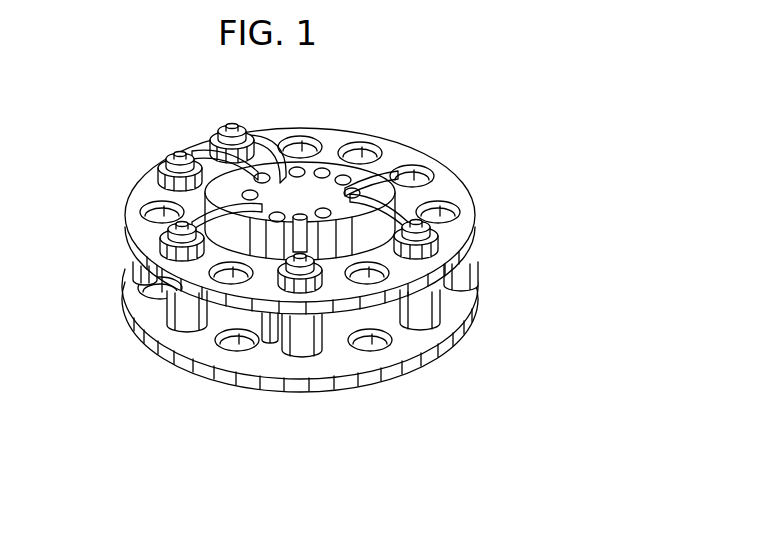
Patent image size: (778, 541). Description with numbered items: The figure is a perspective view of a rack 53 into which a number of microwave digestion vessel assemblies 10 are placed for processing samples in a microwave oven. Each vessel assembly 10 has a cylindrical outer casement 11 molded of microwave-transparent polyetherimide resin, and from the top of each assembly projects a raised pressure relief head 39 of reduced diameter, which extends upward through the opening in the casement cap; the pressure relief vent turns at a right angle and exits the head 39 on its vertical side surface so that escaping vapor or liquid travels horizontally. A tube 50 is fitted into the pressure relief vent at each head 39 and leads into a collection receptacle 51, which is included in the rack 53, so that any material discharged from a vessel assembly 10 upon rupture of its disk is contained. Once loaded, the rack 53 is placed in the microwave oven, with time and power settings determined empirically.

The vessel assembly 10 is at (207, 125).
The outer casement 11 is at (172, 320).
The pressure relief head 39 is at (233, 124).
The tube 50 is at (272, 142).
The collection receptacle 51 is at (338, 186).
The rack 53 is at (300, 392).